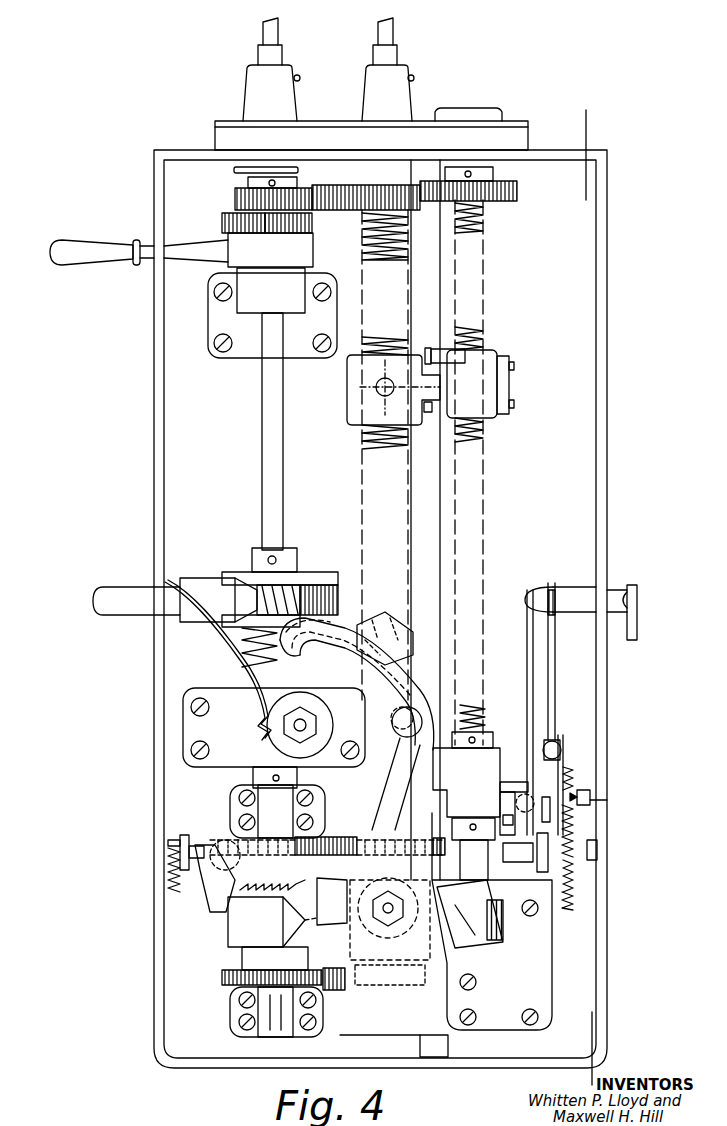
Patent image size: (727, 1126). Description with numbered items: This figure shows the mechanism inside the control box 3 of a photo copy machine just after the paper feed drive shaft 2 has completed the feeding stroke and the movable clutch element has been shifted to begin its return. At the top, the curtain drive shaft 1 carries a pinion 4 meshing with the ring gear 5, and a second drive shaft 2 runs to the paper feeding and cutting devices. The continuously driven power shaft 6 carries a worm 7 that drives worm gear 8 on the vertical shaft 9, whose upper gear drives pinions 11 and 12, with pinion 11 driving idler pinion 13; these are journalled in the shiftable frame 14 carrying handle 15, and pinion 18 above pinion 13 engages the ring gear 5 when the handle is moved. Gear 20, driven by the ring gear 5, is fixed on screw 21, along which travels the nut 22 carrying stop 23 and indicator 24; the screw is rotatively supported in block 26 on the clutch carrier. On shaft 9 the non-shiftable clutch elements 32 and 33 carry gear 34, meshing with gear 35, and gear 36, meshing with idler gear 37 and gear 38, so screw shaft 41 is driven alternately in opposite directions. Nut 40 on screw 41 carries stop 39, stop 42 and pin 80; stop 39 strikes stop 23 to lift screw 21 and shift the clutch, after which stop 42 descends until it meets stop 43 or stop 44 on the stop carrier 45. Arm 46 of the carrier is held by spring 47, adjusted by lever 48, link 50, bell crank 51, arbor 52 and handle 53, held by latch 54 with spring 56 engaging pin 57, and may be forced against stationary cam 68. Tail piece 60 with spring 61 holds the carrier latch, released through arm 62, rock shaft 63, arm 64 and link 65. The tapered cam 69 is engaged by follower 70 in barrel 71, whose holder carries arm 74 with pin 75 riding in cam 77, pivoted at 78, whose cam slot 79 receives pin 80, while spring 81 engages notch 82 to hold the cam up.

The drive shaft 1 is at (266, 32).
The drive shaft 2 is at (398, 32).
The control box 3 is at (600, 213).
The pinion 4 is at (240, 204).
The ring gear 5 is at (337, 199).
The power shaft 6 is at (116, 598).
The worm 7 is at (292, 600).
The worm gear 8 is at (330, 598).
The vertical shaft 9 is at (270, 468).
The pinion 11 is at (240, 226).
The pinion 12 is at (589, 123).
The idler pinion 13 is at (305, 225).
The shiftable frame 14 is at (310, 262).
The handle 15 is at (60, 249).
The pinion 18 is at (294, 188).
The gear 20 is at (510, 194).
The screw 21 is at (485, 226).
The nut 22 is at (487, 415).
The stop 23 is at (441, 359).
The indicator 24 is at (505, 376).
The block 26 is at (470, 862).
The clutch element 32 is at (305, 871).
The clutch element 33 is at (262, 957).
The gear 34 is at (304, 840).
The gear 35 is at (372, 830).
The gear 36 is at (247, 978).
The idler gear 37 is at (331, 972).
The gear 38 is at (392, 985).
The stop 39 is at (430, 349).
The nut 40 is at (350, 392).
The screw shaft 41 is at (386, 250).
The stop 42 is at (432, 426).
The stop 43 is at (444, 761).
The stop 44 is at (446, 814).
The stop carrier 45 is at (501, 790).
The arm 46 is at (546, 798).
The spring 47 is at (590, 797).
The lever 48 is at (562, 762).
The link 50 is at (555, 742).
The bell crank 51 is at (556, 656).
The arbor 52 is at (612, 592).
The handle 53 is at (636, 590).
The latch 54 is at (570, 880).
The spring 56 is at (573, 781).
The pin 57 is at (590, 845).
The tail piece 60 is at (193, 846).
The spring 61 is at (170, 872).
The arm 62 is at (178, 842).
The rock shaft 63 is at (206, 862).
The arm 64 is at (542, 866).
The link 65 is at (530, 645).
The stationary cam 68 is at (508, 826).
The tapered cam 69 is at (255, 923).
The follower 70 is at (318, 895).
The barrel 71 is at (488, 946).
The arm 74 is at (375, 788).
The pin 75 is at (403, 740).
The cam 77 is at (421, 680).
The pivot 78 is at (303, 735).
The cam slot 79 is at (386, 618).
The pin 80 is at (382, 381).
The spring 81 is at (236, 645).
The notch 82 is at (295, 720).